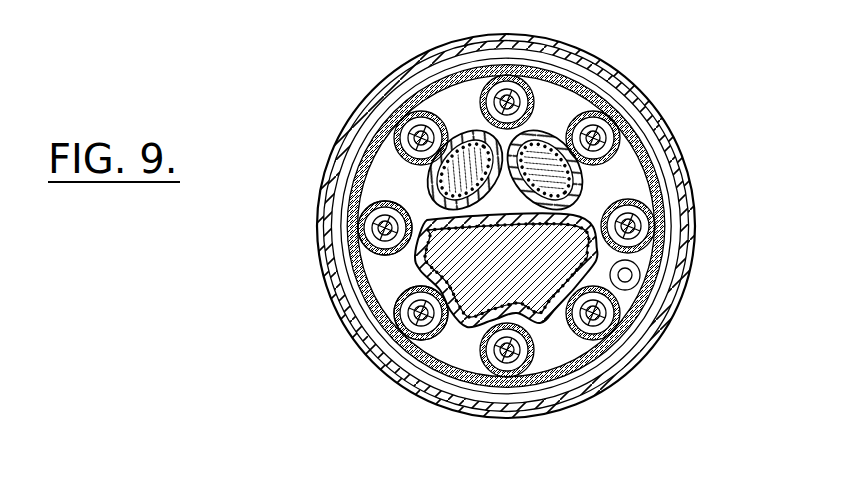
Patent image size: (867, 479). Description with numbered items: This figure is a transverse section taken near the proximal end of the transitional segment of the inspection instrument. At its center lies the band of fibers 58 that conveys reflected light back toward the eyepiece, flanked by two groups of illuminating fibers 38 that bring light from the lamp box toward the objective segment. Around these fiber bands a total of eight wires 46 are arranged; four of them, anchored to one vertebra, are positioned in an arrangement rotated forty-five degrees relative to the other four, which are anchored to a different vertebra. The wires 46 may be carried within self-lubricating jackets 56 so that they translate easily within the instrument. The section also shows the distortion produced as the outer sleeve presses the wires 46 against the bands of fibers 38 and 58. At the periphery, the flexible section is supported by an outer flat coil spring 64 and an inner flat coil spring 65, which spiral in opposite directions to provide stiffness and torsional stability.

The fibers 38 is at (443, 187).
The wires 46 is at (591, 136).
The self-lubricating jackets 56 is at (360, 233).
The fibers 58 is at (528, 259).
The outer flat coil spring 64 is at (367, 125).
The inner flat coil spring 65 is at (456, 70).